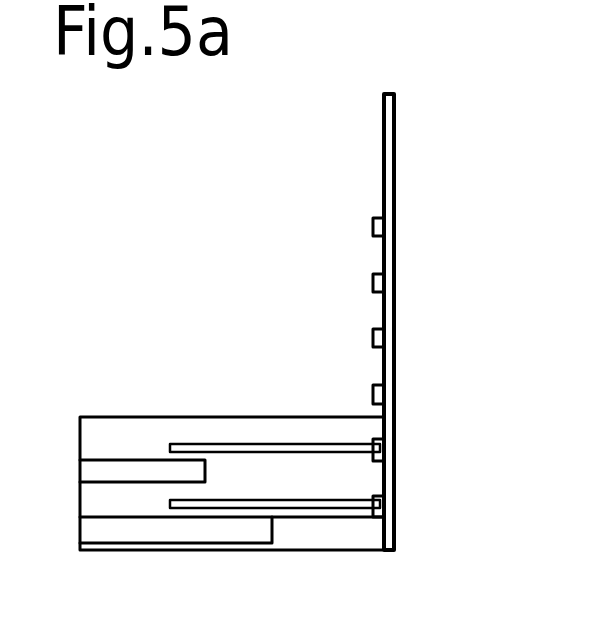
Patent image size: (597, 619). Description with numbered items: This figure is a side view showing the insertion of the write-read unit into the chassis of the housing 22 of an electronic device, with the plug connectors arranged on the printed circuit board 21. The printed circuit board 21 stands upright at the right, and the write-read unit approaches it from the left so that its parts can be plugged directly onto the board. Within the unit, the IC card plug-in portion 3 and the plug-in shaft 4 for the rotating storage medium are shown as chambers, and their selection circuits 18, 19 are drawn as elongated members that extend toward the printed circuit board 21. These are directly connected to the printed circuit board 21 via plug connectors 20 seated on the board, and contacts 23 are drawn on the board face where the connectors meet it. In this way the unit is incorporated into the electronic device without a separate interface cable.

The printed circuit board 21 is at (394, 125).
The housing 22 is at (596, 186).
The solder contacts 23 is at (378, 227).
The plug connector 20 is at (386, 432).
The plug-in portion 3 is at (197, 472).
The plug-in shaft 4 is at (255, 528).
The selection circuit 18 is at (270, 443).
The selection circuit 19 is at (170, 500).